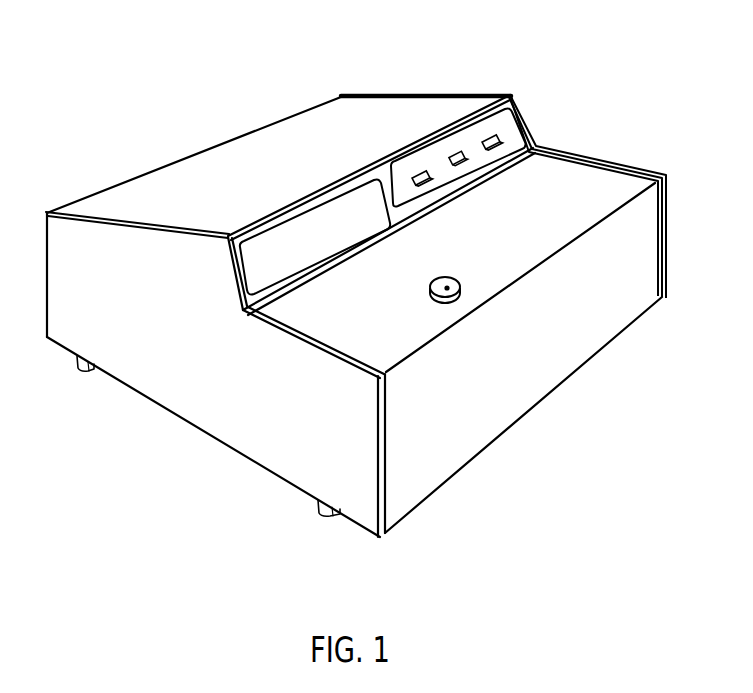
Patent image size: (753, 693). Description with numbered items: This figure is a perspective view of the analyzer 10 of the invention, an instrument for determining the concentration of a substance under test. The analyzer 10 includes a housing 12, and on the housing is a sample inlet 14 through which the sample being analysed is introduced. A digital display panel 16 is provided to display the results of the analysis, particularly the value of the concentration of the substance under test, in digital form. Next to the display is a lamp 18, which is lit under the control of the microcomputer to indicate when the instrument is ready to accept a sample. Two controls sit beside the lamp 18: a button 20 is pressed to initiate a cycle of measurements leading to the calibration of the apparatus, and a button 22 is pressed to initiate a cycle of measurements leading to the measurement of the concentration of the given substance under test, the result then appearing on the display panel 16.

The analyzer 10 is at (578, 125).
The housing 12 is at (663, 236).
The sample inlet 14 is at (448, 284).
The digital display panel 16 is at (317, 217).
The lamp 18 is at (425, 157).
The button 20 is at (455, 152).
The button 22 is at (497, 118).